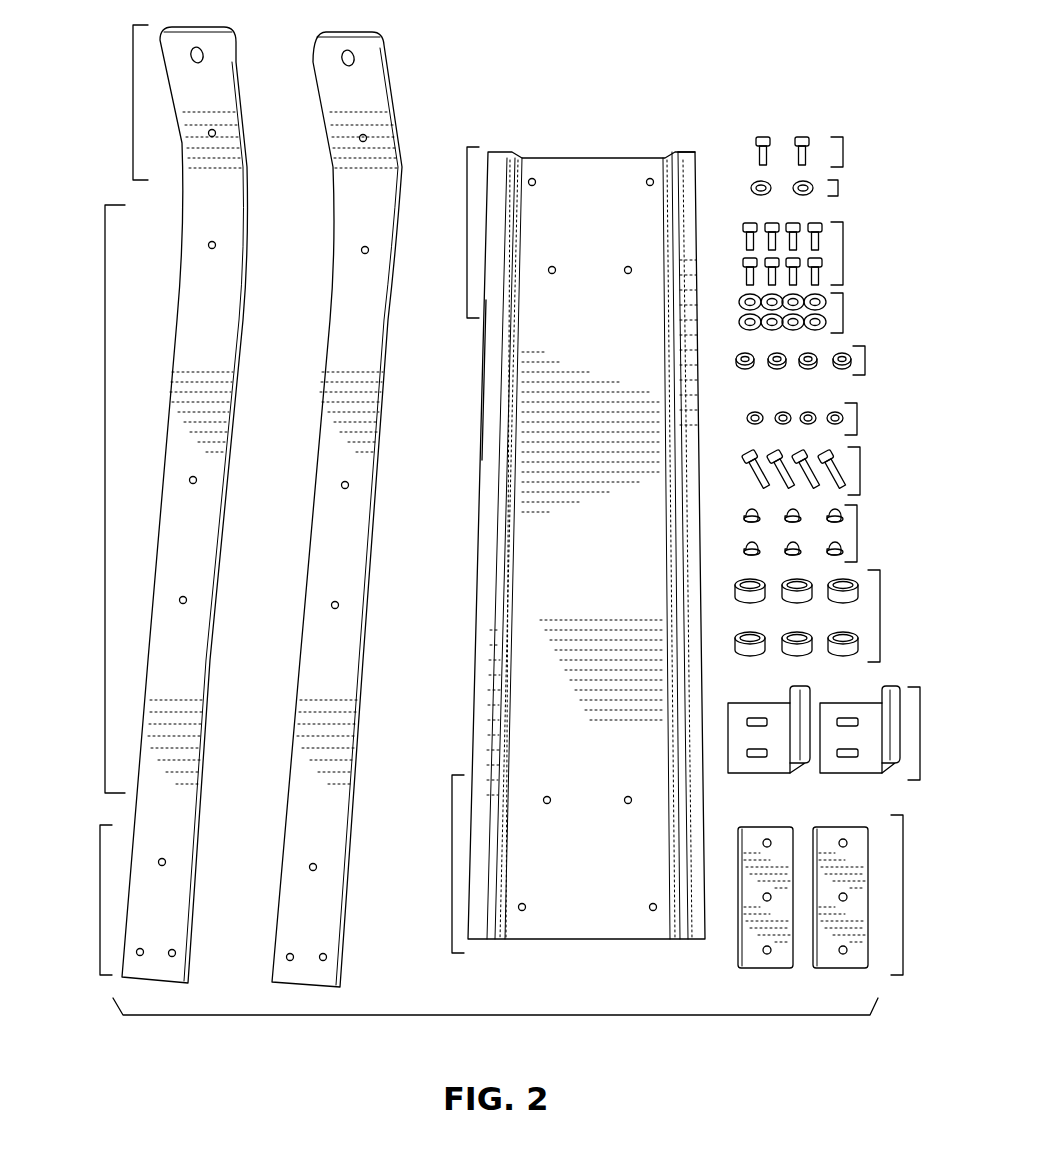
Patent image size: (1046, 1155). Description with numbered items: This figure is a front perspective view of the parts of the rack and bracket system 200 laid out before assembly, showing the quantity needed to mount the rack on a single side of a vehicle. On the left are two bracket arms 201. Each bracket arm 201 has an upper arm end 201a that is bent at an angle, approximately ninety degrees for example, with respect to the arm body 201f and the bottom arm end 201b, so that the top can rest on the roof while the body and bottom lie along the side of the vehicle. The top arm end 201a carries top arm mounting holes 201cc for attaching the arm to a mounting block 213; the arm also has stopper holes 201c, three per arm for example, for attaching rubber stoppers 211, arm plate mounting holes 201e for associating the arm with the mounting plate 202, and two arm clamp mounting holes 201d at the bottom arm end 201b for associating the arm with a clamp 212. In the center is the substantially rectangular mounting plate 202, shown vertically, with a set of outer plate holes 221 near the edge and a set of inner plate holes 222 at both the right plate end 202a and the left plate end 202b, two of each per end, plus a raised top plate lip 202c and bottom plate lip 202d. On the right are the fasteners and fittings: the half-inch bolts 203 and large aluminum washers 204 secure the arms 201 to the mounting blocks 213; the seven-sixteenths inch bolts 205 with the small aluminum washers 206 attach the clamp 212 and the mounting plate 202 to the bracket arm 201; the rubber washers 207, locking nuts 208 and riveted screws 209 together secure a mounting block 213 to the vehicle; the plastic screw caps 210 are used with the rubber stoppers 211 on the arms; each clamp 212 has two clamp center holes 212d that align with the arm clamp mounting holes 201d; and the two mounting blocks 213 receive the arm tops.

The rack and bracket system 200 is at (483, 1015).
The bracket arm 201 is at (313, 52).
The top arm end 201a is at (133, 95).
The bottom arm end 201b is at (100, 898).
The stopper holes 201c is at (362, 251).
The top arm mounting holes 201cc is at (346, 63).
The arm clamp mounting holes 201d is at (320, 956).
The arm plate mounting holes 201e is at (333, 602).
The arm body 201f is at (105, 475).
The mounting plate 202 is at (618, 571).
The right plate end 202a is at (467, 225).
The left plate end 202b is at (452, 865).
The top plate lip 202c is at (485, 368).
The bottom plate lip 202d is at (687, 152).
The outer plate holes 221 is at (647, 180).
The inner plate holes 222 is at (625, 272).
The ½ inch bolt 203 is at (843, 150).
The large aluminum washer 204 is at (838, 188).
The 7/16 inch bolt 205 is at (843, 252).
The small aluminum washer 206 is at (843, 312).
The rubber washer 207 is at (865, 358).
The locking nut 208 is at (857, 418).
The riveted screw 209 is at (860, 472).
The plastic screw cap 210 is at (857, 532).
The rubber stopper 211 is at (880, 615).
The clamp 212 is at (920, 730).
The clamp center holes 212d is at (759, 757).
The mounting block 213 is at (903, 890).